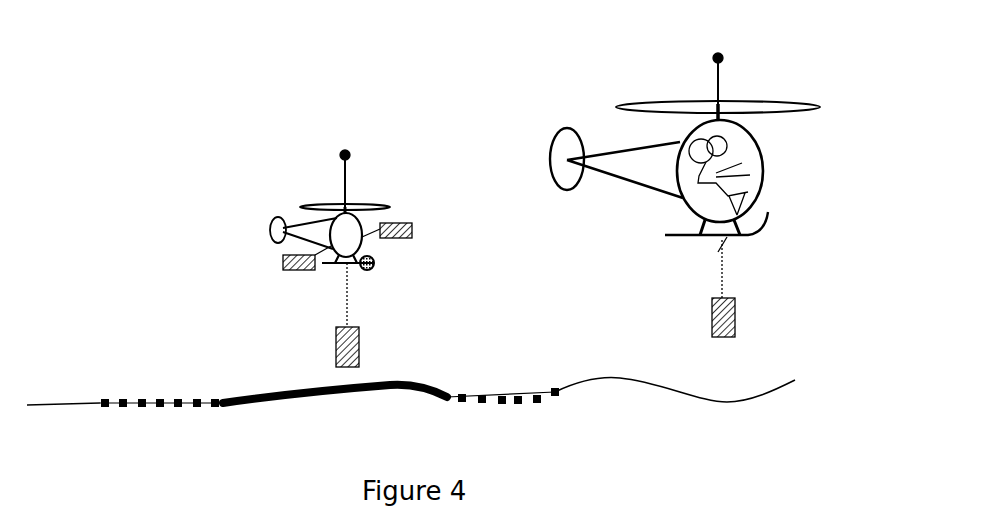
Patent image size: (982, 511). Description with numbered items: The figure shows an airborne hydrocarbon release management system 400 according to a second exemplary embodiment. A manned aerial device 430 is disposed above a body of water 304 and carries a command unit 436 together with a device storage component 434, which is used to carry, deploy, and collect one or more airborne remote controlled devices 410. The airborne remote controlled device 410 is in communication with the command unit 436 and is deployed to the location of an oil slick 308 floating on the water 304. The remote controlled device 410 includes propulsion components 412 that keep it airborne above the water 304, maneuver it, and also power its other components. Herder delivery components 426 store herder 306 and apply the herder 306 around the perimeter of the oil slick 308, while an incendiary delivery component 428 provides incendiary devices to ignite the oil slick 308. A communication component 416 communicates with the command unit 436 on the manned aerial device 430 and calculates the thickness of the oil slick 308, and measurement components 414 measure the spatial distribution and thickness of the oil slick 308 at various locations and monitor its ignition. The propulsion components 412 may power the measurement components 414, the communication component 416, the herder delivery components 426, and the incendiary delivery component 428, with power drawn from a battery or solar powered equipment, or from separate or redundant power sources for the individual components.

The airborne hydrocarbon release management system 400 is at (121, 104).
The airborne remote controlled device 410 is at (312, 141).
The propulsion components 412 is at (313, 205).
The measurement components 414 is at (336, 345).
The communication component 416 is at (349, 171).
The herder delivery components 426 is at (407, 223).
The incendiary delivery component 428 is at (376, 263).
The manned aerial device 430 is at (699, 79).
The device storage component 434 is at (712, 316).
The command unit 436 is at (721, 78).
The body of water 304 is at (748, 404).
The herder 306 is at (483, 396).
The oil slick 308 is at (410, 385).